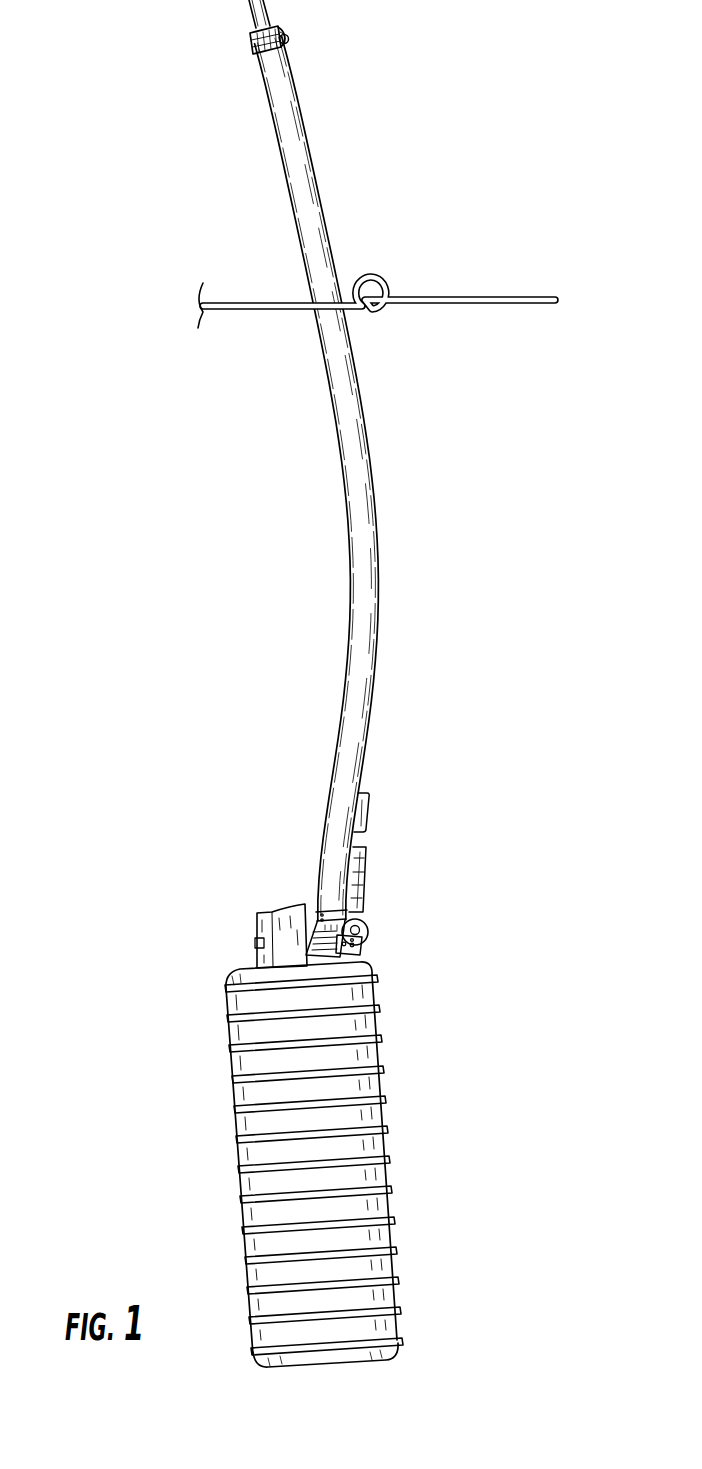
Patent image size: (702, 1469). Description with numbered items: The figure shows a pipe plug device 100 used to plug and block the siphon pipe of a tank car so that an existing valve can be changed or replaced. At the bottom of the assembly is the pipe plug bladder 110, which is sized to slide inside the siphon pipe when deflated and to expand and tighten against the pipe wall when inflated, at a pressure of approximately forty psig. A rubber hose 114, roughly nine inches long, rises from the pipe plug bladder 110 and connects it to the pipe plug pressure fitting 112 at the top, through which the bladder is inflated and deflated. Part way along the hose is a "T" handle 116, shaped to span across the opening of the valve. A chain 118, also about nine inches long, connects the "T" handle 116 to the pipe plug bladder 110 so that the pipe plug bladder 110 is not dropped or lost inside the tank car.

The pipe plug device 100 is at (243, 497).
The pipe plug bladder 110 is at (298, 1127).
The pipe plug pressure fitting 112 is at (250, 50).
The rubber hose 114 is at (355, 660).
The "T" handle 116 is at (308, 297).
The chain 118 is at (362, 888).